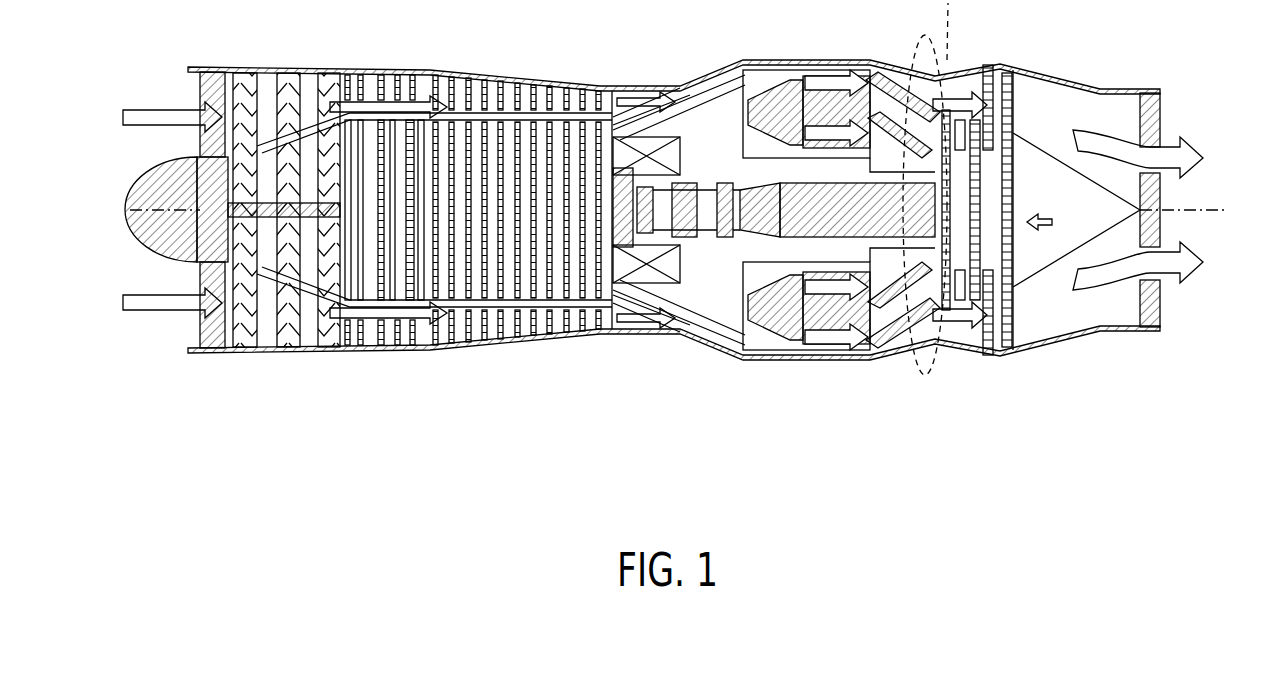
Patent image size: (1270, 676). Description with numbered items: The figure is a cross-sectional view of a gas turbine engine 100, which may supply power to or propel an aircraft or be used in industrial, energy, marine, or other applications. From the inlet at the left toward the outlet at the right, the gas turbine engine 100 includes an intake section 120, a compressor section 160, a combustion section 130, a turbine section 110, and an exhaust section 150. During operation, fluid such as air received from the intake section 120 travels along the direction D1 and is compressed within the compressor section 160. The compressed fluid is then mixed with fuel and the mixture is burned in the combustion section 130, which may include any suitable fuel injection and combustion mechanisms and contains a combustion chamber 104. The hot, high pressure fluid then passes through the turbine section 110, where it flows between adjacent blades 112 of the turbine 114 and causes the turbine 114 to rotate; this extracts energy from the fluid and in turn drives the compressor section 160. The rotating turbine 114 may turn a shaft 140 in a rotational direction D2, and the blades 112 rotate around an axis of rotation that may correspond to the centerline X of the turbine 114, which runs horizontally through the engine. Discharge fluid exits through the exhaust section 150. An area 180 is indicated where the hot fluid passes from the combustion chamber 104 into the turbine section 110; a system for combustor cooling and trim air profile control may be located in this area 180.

The gas turbine engine 100 is at (667, 399).
The combustion chamber 104 is at (873, 88).
The turbine section 110 is at (990, 63).
The blades 112 is at (1003, 186).
The turbine 114 is at (1052, 222).
The intake section 120 is at (178, 330).
The combustion section 130 is at (859, 64).
The shaft 140 is at (843, 222).
The exhaust section 150 is at (1167, 125).
The compressor section 160 is at (455, 72).
The area 180 is at (938, 363).
The direction D1 is at (133, 110).
The rotational direction D2 is at (722, 87).
The centerline x is at (1216, 210).